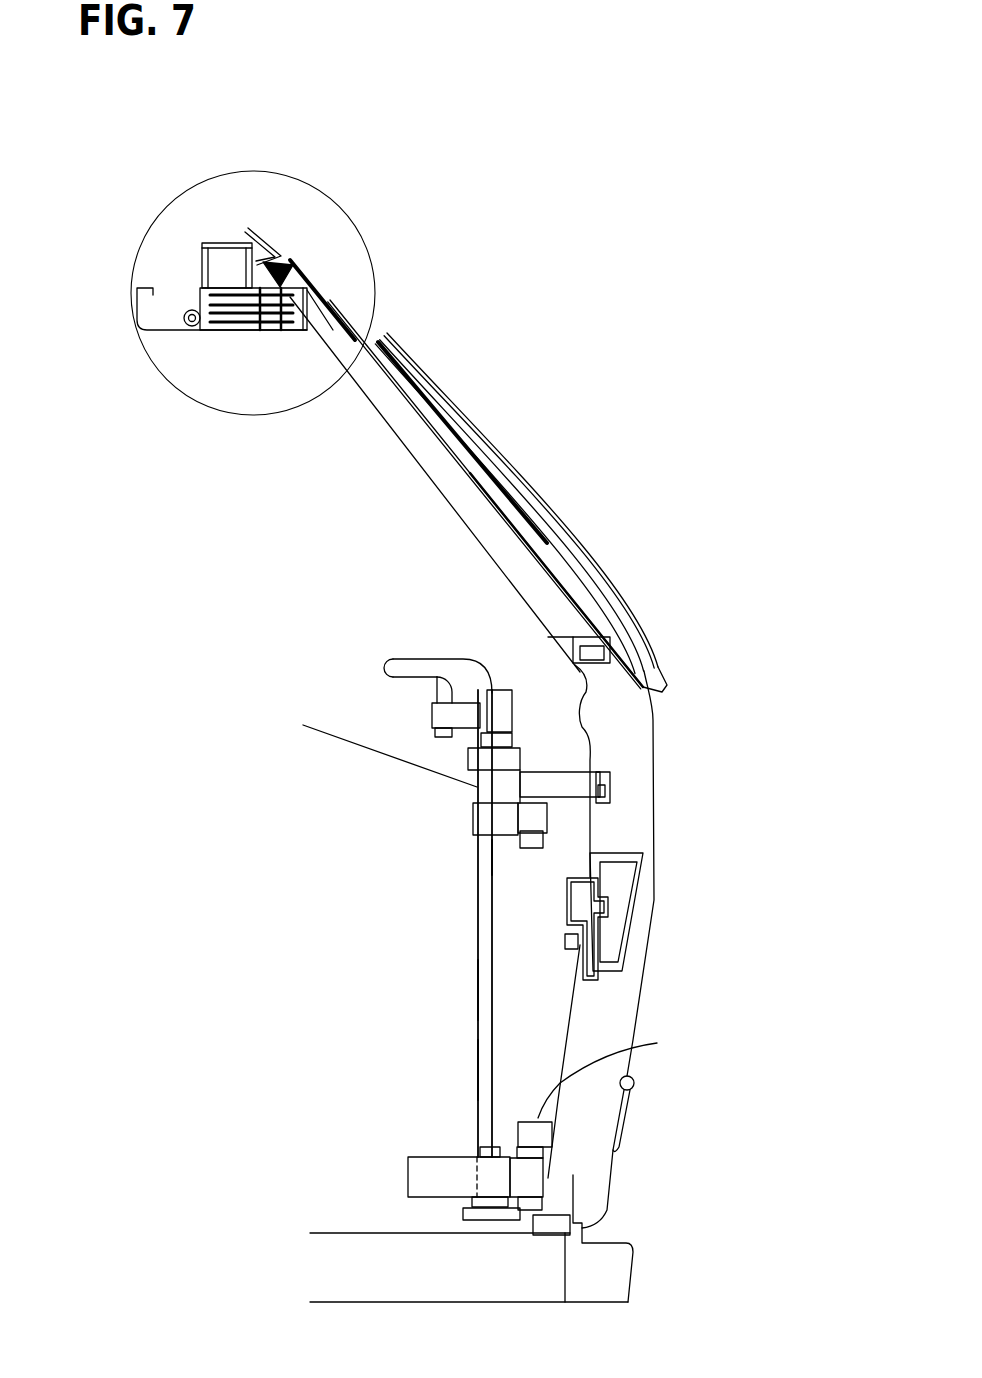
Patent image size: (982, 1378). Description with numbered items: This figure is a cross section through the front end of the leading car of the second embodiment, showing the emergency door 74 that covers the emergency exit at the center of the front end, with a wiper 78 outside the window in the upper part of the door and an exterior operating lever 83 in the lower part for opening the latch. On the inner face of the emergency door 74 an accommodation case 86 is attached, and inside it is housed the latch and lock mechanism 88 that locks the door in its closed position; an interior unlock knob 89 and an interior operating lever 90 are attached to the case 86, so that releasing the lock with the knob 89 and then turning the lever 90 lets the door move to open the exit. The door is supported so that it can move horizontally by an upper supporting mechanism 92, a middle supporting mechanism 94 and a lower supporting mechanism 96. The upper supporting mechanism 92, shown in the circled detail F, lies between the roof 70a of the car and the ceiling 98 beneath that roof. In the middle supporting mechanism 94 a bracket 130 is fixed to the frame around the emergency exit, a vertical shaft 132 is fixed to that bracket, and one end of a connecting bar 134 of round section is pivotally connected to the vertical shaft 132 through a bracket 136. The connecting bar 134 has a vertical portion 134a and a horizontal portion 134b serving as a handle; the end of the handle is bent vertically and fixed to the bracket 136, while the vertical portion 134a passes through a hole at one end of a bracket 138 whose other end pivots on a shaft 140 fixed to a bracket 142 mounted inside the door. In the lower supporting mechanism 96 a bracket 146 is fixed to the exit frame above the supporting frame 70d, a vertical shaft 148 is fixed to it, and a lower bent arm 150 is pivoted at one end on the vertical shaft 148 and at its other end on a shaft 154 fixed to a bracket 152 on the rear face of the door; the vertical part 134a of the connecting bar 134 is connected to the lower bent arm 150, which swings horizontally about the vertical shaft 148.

The roof 70a is at (258, 226).
The supporting frame 70d is at (357, 1230).
The emergency door 74 is at (665, 780).
The wiper 78 is at (503, 458).
The exterior operating lever 83 is at (632, 1117).
The accommodation case 86 is at (590, 866).
The latch and lock mechanism 88 is at (617, 883).
The interior unlock knob 89 is at (565, 947).
The interior operating lever 90 is at (565, 925).
The upper supporting mechanism 92 is at (170, 278).
The middle supporting mechanism 94 is at (423, 785).
The lower supporting mechanism 96 is at (393, 1178).
The ceiling 98 is at (178, 333).
The bracket 130 is at (497, 762).
The vertical shaft 132 is at (497, 690).
The connecting bar 134 is at (470, 990).
The vertical portion 134a is at (475, 1065).
The horizontal portion 134b is at (433, 659).
The bracket 136 is at (478, 728).
The bracket 138 is at (505, 830).
The shaft 140 is at (543, 842).
The bracket 142 is at (567, 793).
The bracket 146 is at (490, 1220).
The vertical shaft 148 is at (490, 1147).
The lower bent arm 150 is at (428, 1157).
The bracket 152 is at (655, 1045).
The shaft 154 is at (560, 1208).
The detail region F is at (353, 219).